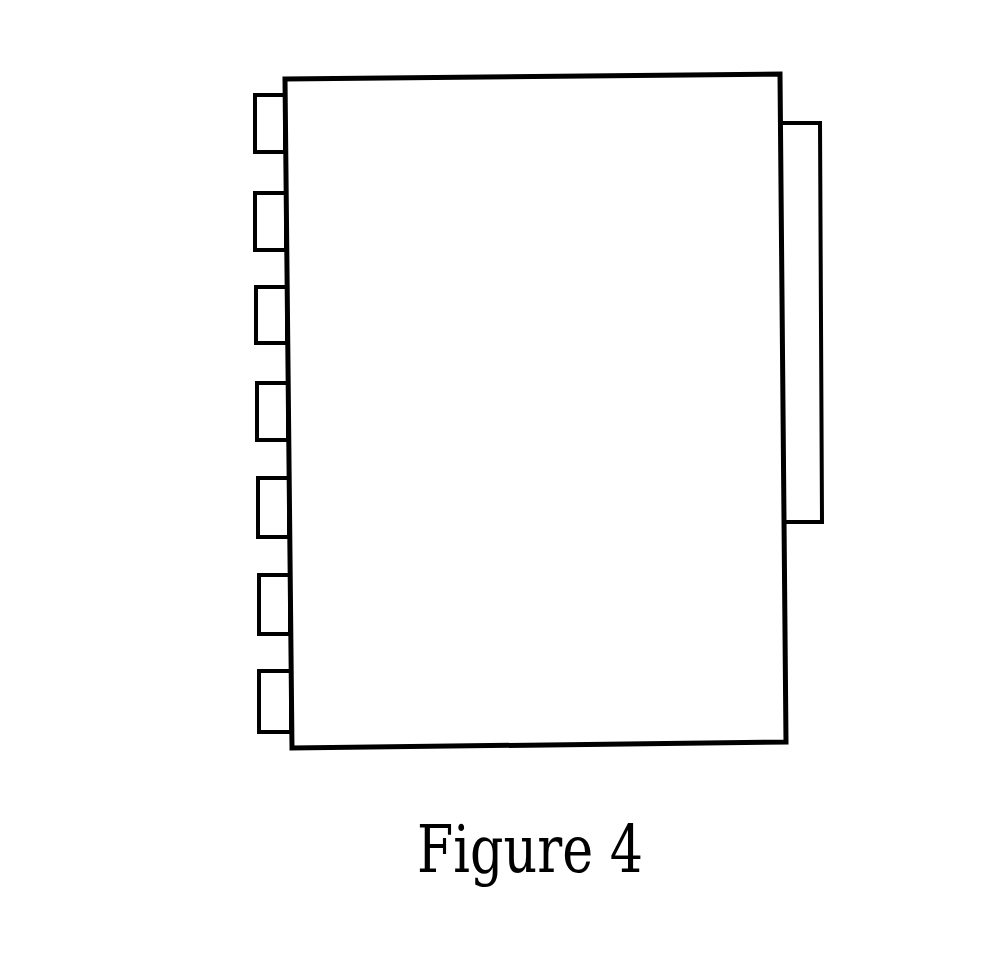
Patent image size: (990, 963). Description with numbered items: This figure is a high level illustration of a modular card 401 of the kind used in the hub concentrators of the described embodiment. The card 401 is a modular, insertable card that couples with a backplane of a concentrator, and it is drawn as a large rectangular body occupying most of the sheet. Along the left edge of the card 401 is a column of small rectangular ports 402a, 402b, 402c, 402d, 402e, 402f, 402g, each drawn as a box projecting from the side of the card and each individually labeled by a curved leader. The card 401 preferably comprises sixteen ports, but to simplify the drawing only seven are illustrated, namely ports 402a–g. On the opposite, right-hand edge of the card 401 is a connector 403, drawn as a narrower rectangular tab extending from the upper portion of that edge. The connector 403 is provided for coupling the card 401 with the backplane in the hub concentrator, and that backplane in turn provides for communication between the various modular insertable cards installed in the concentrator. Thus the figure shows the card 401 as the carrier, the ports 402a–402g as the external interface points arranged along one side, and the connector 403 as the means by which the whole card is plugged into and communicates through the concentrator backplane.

The card 401 is at (503, 70).
The port 402a is at (263, 92).
The port 402b is at (263, 190).
The port 402c is at (265, 284).
The port 402d is at (266, 380).
The port 402e is at (268, 475).
The port 402f is at (269, 572).
The port 402g is at (270, 668).
The connector 403 is at (822, 214).